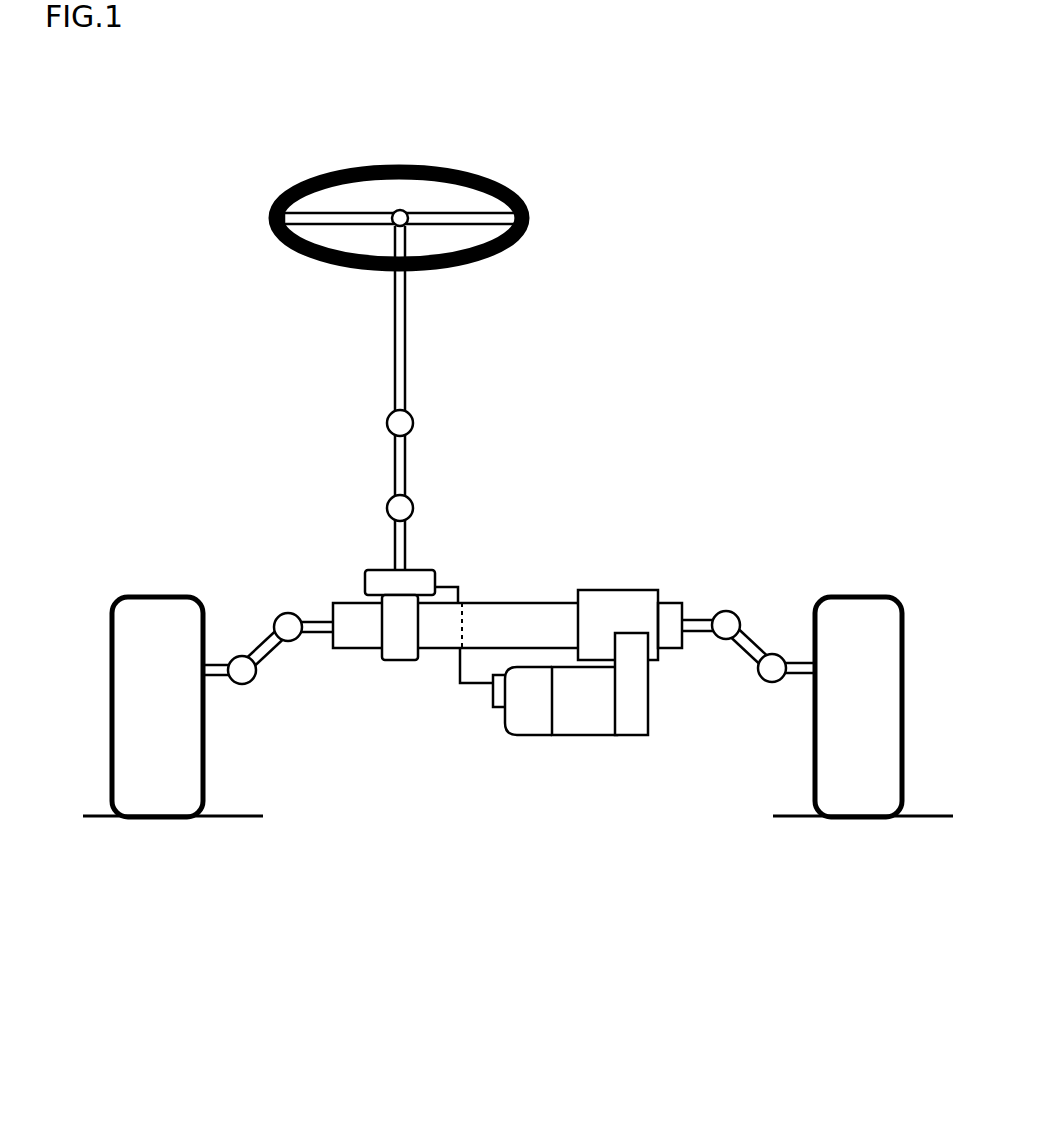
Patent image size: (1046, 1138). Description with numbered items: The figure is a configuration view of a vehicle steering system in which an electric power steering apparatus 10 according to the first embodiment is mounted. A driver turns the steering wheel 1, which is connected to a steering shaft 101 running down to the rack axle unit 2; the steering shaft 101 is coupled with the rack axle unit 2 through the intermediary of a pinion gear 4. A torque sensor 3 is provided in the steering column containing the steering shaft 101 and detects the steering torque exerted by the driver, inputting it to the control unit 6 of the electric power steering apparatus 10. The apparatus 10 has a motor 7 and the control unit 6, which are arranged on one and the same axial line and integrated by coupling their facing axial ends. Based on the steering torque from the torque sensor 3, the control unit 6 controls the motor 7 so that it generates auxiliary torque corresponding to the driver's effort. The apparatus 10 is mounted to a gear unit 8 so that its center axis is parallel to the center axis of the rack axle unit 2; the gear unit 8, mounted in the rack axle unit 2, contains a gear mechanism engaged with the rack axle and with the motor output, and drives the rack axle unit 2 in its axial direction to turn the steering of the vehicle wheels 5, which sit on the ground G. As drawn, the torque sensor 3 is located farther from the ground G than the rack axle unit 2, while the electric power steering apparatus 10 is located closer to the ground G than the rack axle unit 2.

The steering wheel 1 is at (515, 192).
The steering shaft 101 is at (405, 332).
The rack axle unit 2 is at (510, 605).
The torque sensor 3 is at (363, 577).
The pinion gear 4 is at (398, 645).
The vehicle wheels 5 is at (177, 603).
The control unit 6 is at (537, 722).
The motor 7 is at (587, 723).
The gear unit 8 is at (645, 723).
The electric power steering apparatus 10 is at (515, 758).
The ground G is at (230, 816).